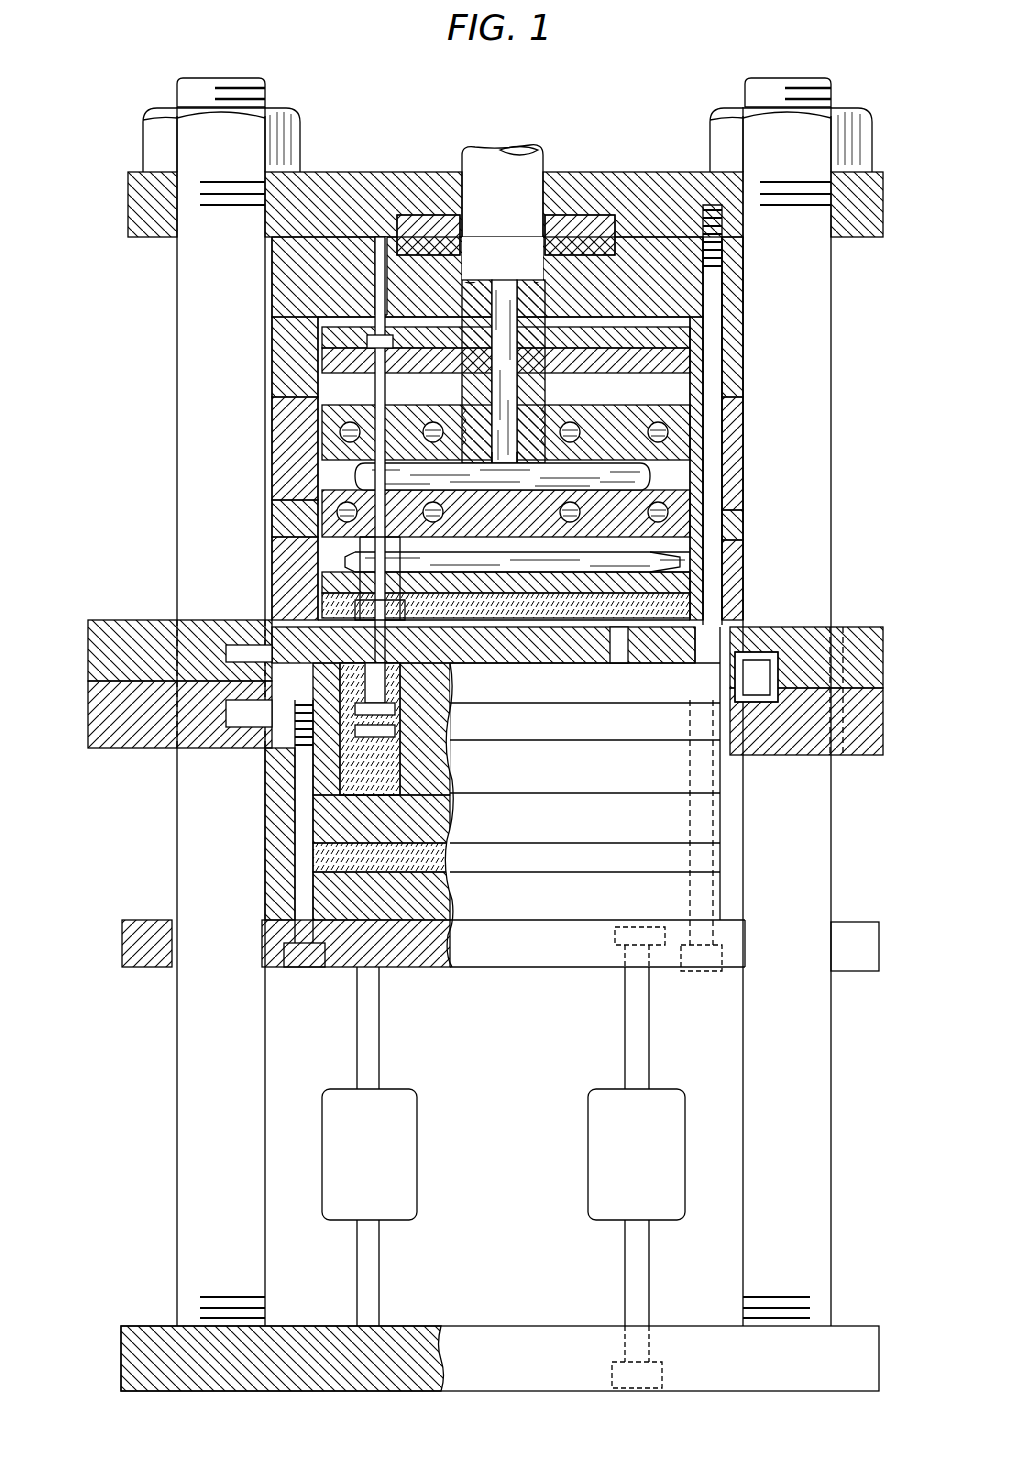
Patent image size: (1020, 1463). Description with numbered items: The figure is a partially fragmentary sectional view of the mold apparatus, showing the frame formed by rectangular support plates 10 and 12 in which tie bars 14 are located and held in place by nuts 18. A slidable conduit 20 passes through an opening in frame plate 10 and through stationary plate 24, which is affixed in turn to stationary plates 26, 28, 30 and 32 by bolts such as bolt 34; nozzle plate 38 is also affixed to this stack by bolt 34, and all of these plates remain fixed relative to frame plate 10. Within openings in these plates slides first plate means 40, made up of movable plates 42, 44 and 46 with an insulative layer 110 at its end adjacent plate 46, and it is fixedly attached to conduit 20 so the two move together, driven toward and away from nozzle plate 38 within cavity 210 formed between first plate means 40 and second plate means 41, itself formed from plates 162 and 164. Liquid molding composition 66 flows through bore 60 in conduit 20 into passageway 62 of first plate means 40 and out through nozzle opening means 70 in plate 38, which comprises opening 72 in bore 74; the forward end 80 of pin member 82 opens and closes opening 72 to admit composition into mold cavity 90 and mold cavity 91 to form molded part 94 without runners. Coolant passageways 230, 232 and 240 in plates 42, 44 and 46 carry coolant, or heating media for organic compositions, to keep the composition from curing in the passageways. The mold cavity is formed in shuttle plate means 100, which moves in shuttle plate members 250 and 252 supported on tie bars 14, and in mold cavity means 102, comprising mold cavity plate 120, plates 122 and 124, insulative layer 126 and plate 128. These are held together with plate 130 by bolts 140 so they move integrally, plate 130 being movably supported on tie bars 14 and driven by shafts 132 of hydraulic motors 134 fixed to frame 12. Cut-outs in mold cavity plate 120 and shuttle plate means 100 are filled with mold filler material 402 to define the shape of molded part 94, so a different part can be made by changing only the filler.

The frame plate 10 is at (357, 172).
The frame plate 12 is at (145, 1326).
The tie bar 14 is at (177, 82).
The nut 18 is at (143, 132).
The slidable conduit 20 is at (525, 148).
The stationary plate 24 is at (735, 292).
The stationary plate 26 is at (272, 388).
The stationary plate 28 is at (272, 462).
The stationary plate 30 is at (272, 520).
The stationary plate 32 is at (272, 552).
The bolt 34 is at (715, 378).
The nozzle plate 38 is at (670, 672).
The first plate means 40 is at (495, 450).
The second plate means 41 is at (624, 382).
The movable plate 42 is at (700, 466).
The movable plate 44 is at (720, 490).
The movable plate 46 is at (700, 590).
The bore 60 is at (492, 386).
The passageway 62 is at (514, 483).
The liquid molding composition 66 is at (545, 385).
The nozzle opening means 70 is at (385, 680).
The opening 72 is at (420, 660).
The bore 74 is at (360, 600).
The forward end 80 is at (400, 700).
The pin member 82 is at (375, 388).
The mold cavity 90 is at (400, 760).
The mold cavity 91 is at (395, 735).
The molded part 94 is at (420, 795).
The shuttle plate means 100 is at (883, 708).
The mold cavity means 102 is at (722, 872).
The insulative layer 110 is at (771, 605).
The mold cavity plate 120 is at (690, 740).
The plate 122 is at (722, 788).
The plate 124 is at (722, 826).
The insulative layer 126 is at (722, 852).
The plate 128 is at (722, 893).
The plate 130 is at (879, 950).
The shaft 132 is at (379, 1028).
The hydraulic motor 134 is at (588, 1145).
The bolt 140 is at (362, 815).
The plate 162 is at (330, 336).
The plate 164 is at (330, 360).
The cavity 210 is at (330, 405).
The coolant passageway 230 is at (650, 436).
The coolant passageway 232 is at (650, 514).
The coolant passageway 240 is at (350, 577).
The shuttle plate member 250 is at (88, 718).
The shuttle plate member 252 is at (88, 652).
The mold filler material 402 is at (450, 824).